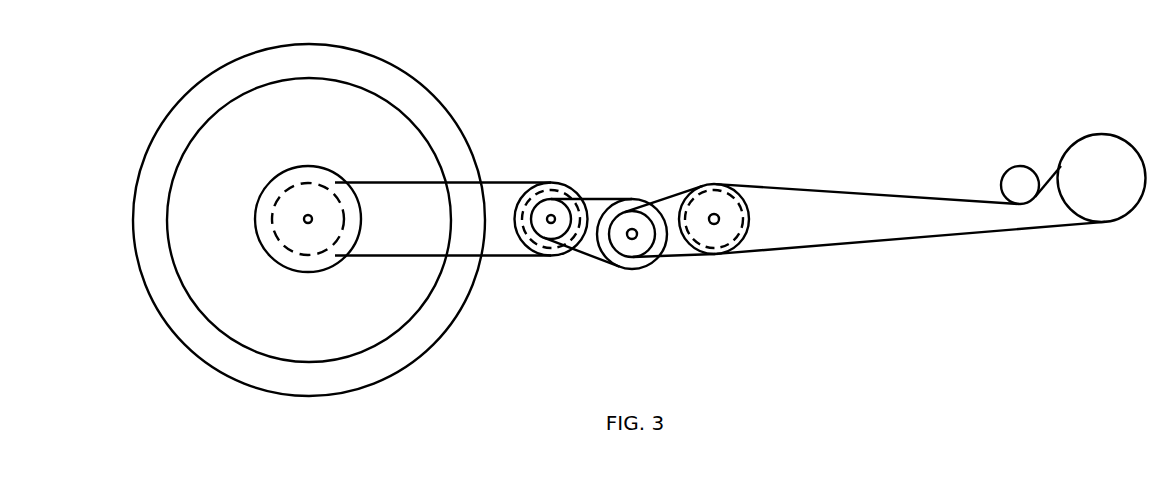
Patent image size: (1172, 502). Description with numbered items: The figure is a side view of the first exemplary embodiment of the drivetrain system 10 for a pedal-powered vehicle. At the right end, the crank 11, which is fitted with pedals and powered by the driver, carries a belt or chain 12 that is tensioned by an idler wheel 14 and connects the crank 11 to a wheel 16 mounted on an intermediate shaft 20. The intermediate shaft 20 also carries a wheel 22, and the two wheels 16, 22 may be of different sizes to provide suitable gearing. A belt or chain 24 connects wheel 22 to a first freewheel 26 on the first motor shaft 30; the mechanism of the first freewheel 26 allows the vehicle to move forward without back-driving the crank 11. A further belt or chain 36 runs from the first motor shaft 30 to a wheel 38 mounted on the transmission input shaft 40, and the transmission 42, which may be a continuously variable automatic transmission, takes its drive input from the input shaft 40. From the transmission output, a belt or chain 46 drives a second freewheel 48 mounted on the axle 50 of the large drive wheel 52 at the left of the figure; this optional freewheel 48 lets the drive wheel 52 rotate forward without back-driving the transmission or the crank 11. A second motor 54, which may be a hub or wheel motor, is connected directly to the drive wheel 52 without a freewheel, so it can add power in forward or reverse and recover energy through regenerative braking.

The drivetrain system 10 is at (138, 22).
The crank 11 is at (1090, 188).
The belt or chain 12 is at (1048, 172).
The idler wheel 14 is at (1015, 167).
The wheel 16 is at (742, 215).
The intermediate shaft 20 is at (717, 216).
The wheel 22 is at (703, 181).
The belt or chain 24 is at (665, 198).
The first freewheel 26 is at (613, 253).
The first motor shaft 30 is at (635, 237).
The belt or chain 36 is at (608, 198).
The wheel 38 is at (543, 198).
The transmission input shaft 40 is at (552, 223).
The transmission 42 is at (525, 237).
The belt or chain 46 is at (517, 182).
The second freewheel 48 is at (272, 218).
The axle 50 is at (303, 217).
The drive wheel 52 is at (168, 110).
The second motor 54 is at (277, 172).